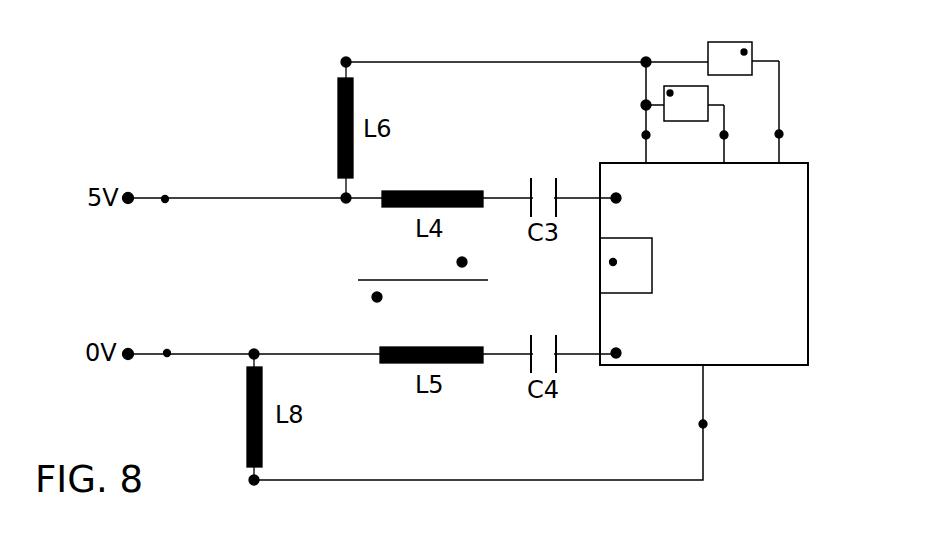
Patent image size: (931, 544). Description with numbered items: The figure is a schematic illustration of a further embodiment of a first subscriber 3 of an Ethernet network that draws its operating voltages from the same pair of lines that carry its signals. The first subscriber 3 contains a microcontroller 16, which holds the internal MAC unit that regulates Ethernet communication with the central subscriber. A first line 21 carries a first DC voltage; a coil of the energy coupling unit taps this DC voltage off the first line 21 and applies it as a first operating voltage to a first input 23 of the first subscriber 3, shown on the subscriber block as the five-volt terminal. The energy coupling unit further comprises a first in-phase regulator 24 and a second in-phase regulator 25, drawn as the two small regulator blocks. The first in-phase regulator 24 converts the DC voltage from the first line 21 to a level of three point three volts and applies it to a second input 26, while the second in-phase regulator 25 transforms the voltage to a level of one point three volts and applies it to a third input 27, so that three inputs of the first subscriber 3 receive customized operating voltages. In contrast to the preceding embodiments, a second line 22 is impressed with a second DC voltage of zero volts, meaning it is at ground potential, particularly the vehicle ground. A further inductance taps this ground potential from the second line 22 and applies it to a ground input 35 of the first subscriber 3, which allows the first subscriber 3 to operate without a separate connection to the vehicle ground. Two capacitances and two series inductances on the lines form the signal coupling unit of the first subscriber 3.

The first subscriber 3 is at (771, 366).
The microcontroller 16 is at (612, 263).
The first line 21 is at (166, 198).
The second line 22 is at (168, 352).
The first input 23 is at (643, 136).
The first in-phase regulator 24 is at (670, 93).
The second in-phase regulator 25 is at (744, 52).
The second input 26 is at (726, 134).
The third input 27 is at (781, 133).
The ground input 35 is at (700, 423).